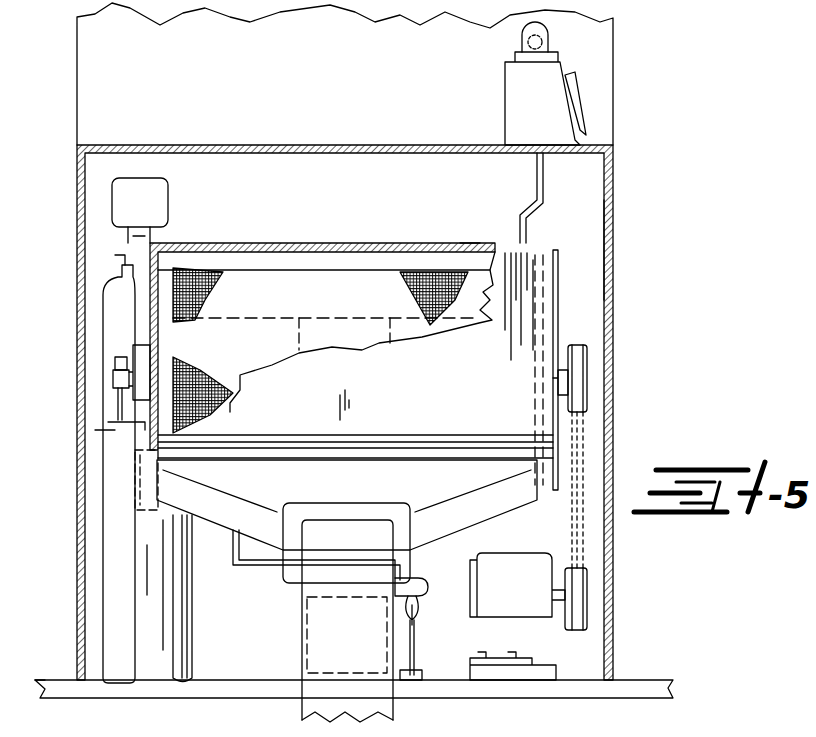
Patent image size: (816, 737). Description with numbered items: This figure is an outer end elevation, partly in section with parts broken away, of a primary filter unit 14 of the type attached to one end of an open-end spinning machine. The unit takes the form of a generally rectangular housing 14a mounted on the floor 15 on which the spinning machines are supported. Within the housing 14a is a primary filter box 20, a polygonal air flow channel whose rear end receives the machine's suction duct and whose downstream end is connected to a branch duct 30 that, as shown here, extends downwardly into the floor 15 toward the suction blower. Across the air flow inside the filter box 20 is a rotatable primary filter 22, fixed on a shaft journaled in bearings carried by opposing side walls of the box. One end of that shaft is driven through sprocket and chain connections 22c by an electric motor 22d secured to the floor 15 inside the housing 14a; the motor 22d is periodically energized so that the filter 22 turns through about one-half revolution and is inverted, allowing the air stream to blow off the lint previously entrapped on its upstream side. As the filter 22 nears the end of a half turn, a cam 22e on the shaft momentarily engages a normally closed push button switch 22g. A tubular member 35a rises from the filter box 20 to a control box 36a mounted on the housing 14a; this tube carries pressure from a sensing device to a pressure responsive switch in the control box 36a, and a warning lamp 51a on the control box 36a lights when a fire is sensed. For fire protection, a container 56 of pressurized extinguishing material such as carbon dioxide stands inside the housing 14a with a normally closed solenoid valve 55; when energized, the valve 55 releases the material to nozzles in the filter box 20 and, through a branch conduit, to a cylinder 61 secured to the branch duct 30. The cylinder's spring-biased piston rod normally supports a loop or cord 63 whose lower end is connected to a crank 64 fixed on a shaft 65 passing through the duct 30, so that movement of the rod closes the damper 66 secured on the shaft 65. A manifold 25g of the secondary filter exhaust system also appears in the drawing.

The primary filter unit 14 is at (626, 223).
The housing 14a is at (614, 280).
The floor 15 is at (630, 690).
The primary filter box 20 is at (460, 232).
The primary filter 22 is at (345, 272).
The sprocket and chain connections 22c is at (585, 432).
The electric motor 22d is at (525, 630).
The cam 22e is at (117, 362).
The push button switch 22g is at (115, 380).
The manifold 25g is at (26, 703).
The branch duct 30 is at (340, 712).
The tubular member 35a is at (528, 212).
The control box 36a is at (508, 112).
The lamp 51a is at (522, 42).
The solenoid valve 55 is at (150, 232).
The container 56 is at (108, 540).
The cylinder 61 is at (422, 580).
The loop or cord 63 is at (405, 612).
The crank 64 is at (405, 655).
The shaft 65 is at (400, 686).
The damper 66 is at (307, 625).